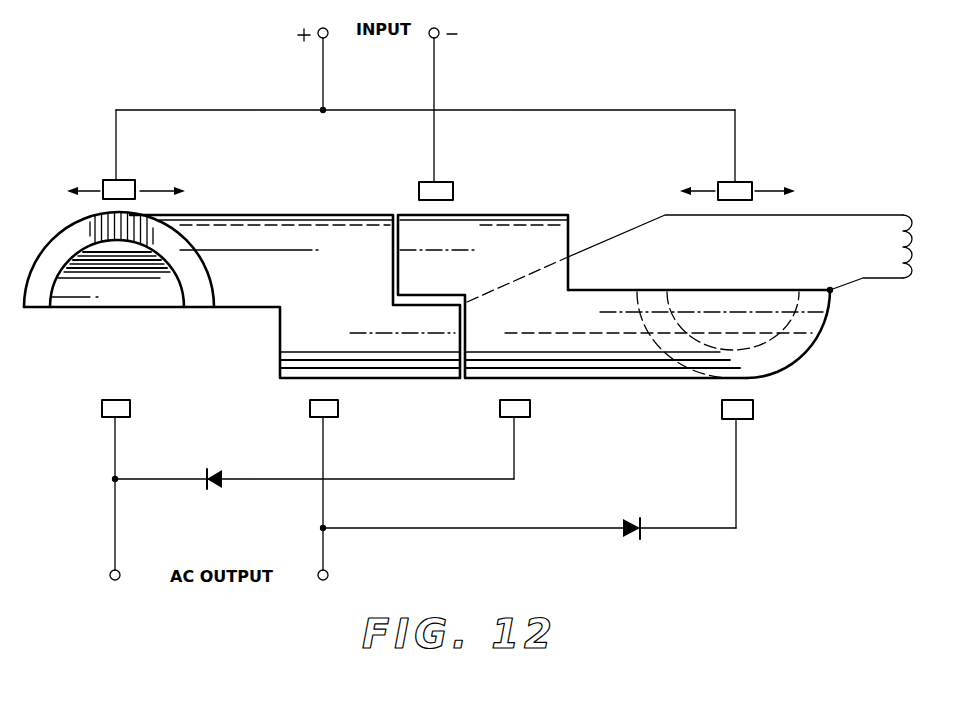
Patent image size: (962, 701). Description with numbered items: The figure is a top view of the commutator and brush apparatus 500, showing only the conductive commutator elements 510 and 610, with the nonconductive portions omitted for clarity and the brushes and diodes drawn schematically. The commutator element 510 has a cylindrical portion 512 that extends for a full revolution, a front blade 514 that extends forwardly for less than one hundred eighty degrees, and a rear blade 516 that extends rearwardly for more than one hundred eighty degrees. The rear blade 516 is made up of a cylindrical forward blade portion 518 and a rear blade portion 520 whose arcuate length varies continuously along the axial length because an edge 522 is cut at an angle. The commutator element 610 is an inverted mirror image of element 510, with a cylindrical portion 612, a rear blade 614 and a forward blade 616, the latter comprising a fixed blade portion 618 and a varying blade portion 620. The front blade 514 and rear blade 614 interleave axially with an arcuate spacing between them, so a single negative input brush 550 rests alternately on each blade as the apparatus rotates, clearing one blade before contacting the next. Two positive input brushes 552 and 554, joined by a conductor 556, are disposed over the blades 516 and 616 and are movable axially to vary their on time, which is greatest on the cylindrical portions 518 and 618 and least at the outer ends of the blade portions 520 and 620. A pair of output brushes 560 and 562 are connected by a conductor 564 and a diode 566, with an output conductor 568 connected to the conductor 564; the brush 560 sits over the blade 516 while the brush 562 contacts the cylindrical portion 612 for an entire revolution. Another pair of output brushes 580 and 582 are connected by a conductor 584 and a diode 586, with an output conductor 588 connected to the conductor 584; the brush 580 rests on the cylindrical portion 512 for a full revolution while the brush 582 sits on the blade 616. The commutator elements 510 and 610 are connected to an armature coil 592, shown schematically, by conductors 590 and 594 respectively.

The commutator and brush apparatus 500 is at (481, 267).
The commutator element 510 is at (238, 289).
The cylindrical portion 512 is at (332, 232).
The front blade 514 is at (417, 367).
The rear blade 516 is at (148, 297).
The forward blade portion 518 is at (250, 275).
The rear blade portion 520 is at (107, 293).
The edge 522 is at (64, 245).
The negative input brush 550 is at (441, 182).
The positive input brush 552 is at (128, 180).
The positive input brush 554 is at (745, 182).
The conductor 556 is at (573, 110).
The output brush 560 is at (123, 417).
The output brush 562 is at (526, 417).
The conductor 564 is at (513, 441).
The diode 566 is at (215, 464).
The output conductor 568 is at (113, 530).
The output brush 580 is at (331, 417).
The output brush 582 is at (750, 419).
The conductor 584 is at (738, 496).
The diode 586 is at (630, 518).
The output conductor 588 is at (325, 530).
The conductor 590 is at (756, 252).
The armature coil 592 is at (915, 232).
The conductor 594 is at (880, 280).
The commutator element 610 is at (644, 294).
The cylindrical portion 612 is at (566, 238).
The rear blade 614 is at (460, 228).
The forward blade 616 is at (795, 372).
The blade portion 618 is at (627, 367).
The blade portion 620 is at (815, 330).